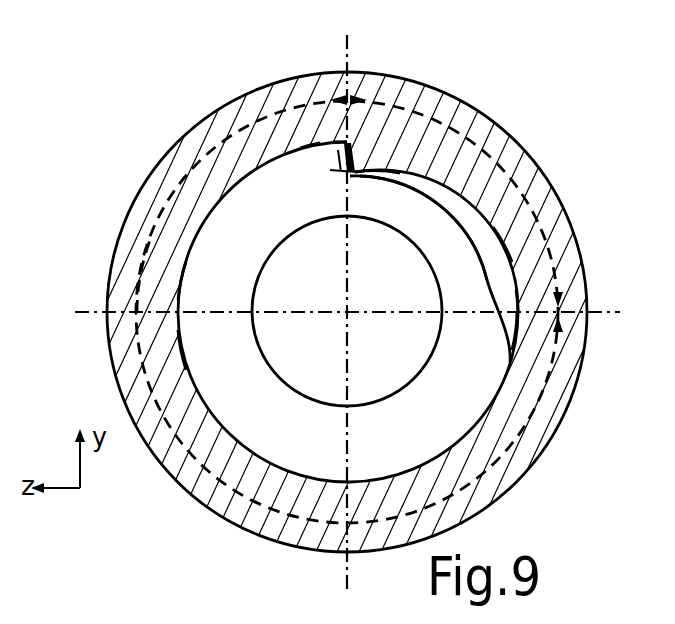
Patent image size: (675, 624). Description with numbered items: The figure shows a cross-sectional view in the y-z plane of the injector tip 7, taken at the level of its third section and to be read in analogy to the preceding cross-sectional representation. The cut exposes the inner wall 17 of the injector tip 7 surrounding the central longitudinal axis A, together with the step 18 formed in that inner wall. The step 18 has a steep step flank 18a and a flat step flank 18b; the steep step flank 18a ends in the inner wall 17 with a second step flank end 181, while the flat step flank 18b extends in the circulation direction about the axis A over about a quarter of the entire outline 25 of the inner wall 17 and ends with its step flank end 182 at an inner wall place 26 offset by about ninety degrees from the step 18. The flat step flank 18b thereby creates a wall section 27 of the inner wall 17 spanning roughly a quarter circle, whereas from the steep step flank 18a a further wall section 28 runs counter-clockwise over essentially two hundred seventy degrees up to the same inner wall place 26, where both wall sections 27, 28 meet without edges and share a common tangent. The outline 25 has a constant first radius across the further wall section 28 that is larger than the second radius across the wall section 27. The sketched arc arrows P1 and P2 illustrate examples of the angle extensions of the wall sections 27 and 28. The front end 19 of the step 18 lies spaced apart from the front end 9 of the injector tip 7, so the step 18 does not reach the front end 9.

The injector tip 7 is at (460, 76).
The front end 9 is at (408, 237).
The inner wall 17 is at (227, 218).
The step 18 is at (364, 148).
The steep step flank 18a is at (334, 150).
The flat step flank 18b is at (498, 247).
The front end of step 19 is at (338, 174).
The outline 25 is at (185, 350).
The inner wall place 26 is at (503, 310).
The wall section 27 is at (503, 205).
The further wall section 28 is at (197, 262).
The second step flank end 181 is at (326, 150).
The step flank end 182 is at (500, 307).
The arc arrow P1 is at (495, 140).
The arc arrow P2 is at (138, 305).
The central longitudinal axis A is at (352, 316).